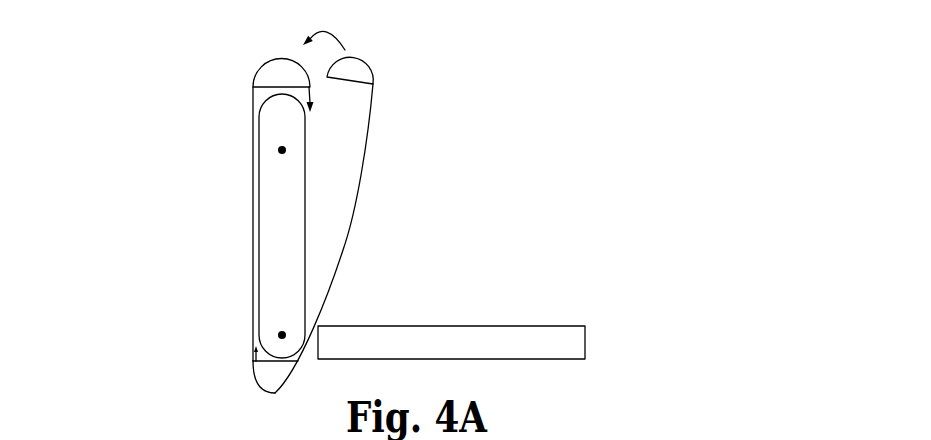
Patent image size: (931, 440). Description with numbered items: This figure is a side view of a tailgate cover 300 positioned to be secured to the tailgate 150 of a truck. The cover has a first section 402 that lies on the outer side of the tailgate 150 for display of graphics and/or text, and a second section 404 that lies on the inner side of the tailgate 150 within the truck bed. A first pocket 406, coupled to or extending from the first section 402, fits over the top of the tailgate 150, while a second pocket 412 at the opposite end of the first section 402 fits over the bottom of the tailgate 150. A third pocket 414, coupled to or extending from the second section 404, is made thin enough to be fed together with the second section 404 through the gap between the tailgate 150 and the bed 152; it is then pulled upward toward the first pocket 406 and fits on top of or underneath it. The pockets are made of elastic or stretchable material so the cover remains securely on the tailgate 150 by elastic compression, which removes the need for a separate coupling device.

The stylus assembly 300 is at (134, 98).
The first section 402 is at (253, 134).
The second section 404 is at (367, 140).
The first pocket 406 is at (286, 68).
The second pocket 412 is at (255, 363).
The third pocket 414 is at (358, 67).
The tailgate 150 is at (296, 215).
The bed 152 is at (530, 332).